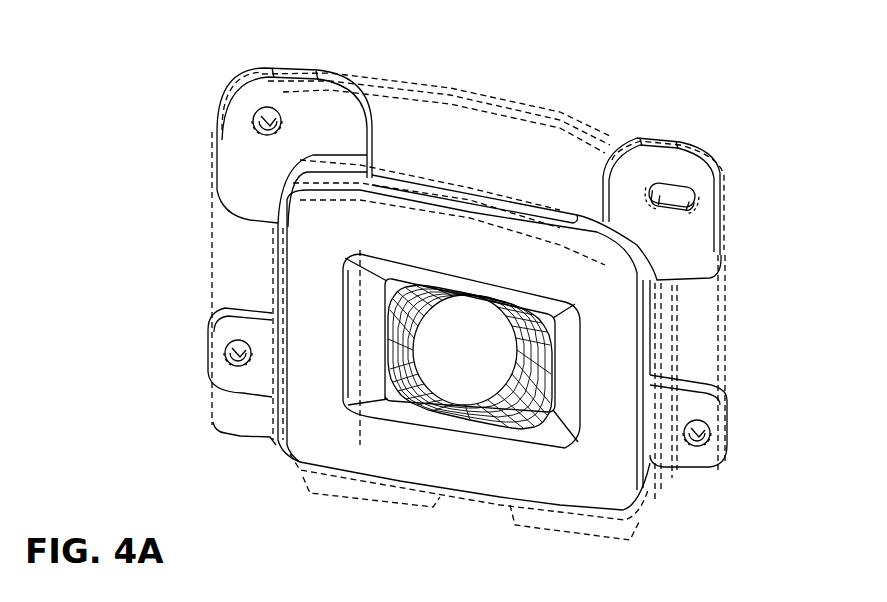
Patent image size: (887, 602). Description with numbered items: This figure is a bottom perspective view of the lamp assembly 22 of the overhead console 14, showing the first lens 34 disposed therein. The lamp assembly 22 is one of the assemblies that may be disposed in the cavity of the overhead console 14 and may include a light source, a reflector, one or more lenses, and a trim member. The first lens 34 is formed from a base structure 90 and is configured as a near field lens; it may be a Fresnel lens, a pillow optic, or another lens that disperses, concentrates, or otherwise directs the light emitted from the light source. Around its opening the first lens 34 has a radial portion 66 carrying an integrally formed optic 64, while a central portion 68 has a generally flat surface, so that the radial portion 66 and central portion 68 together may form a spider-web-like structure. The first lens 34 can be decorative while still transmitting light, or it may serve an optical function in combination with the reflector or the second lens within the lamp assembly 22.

The overhead console 14 is at (672, 100).
The lamp assembly 22 is at (555, 107).
The first lens 34 is at (512, 348).
The optics 64 is at (512, 305).
The radial portion 66 is at (547, 363).
The central portion 68 is at (467, 365).
The base structure 90 is at (443, 312).